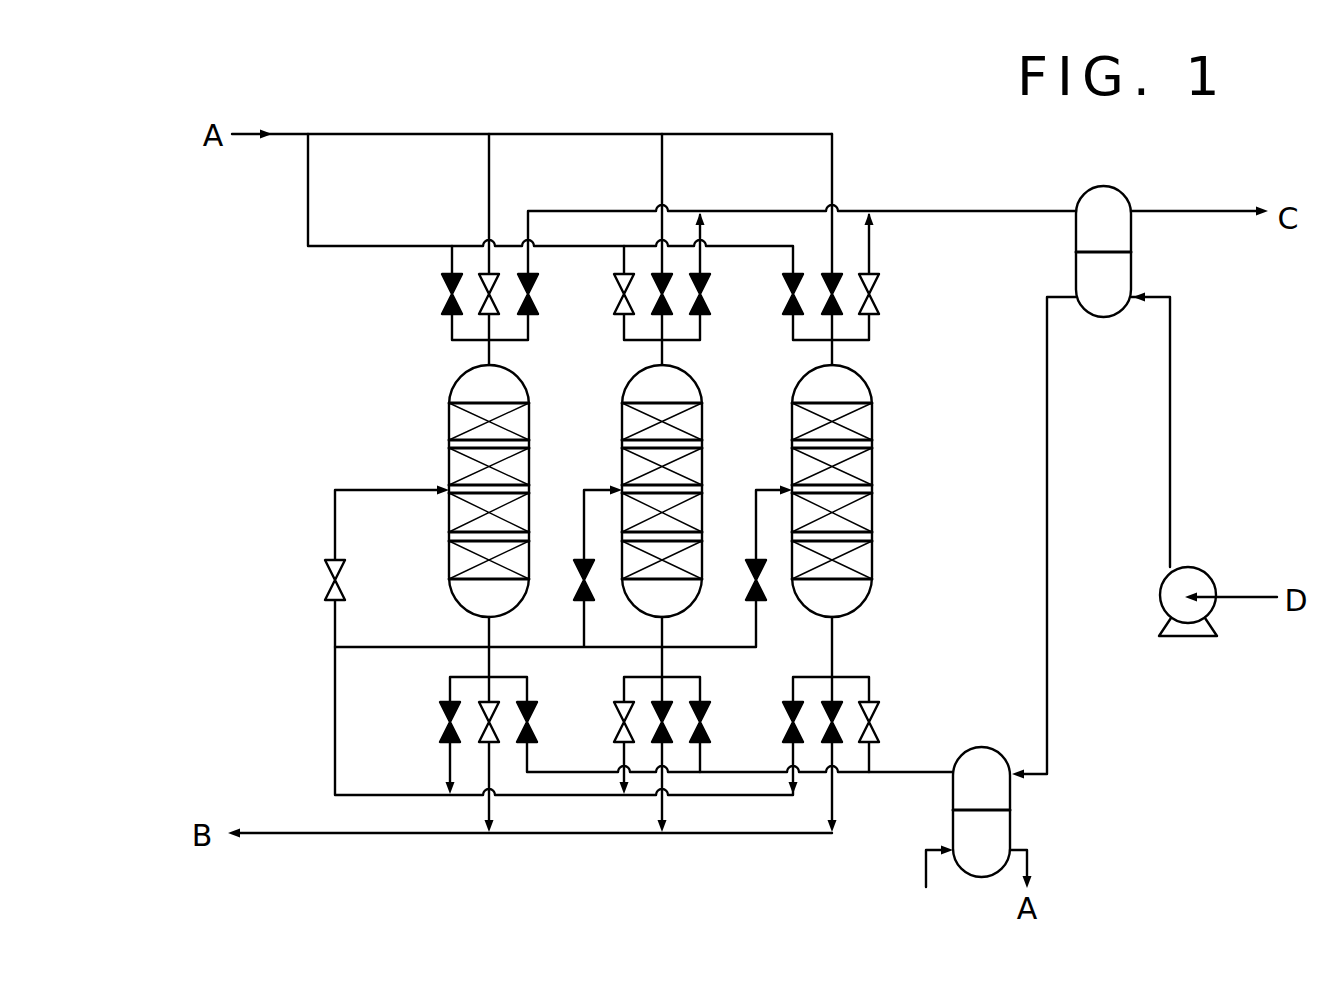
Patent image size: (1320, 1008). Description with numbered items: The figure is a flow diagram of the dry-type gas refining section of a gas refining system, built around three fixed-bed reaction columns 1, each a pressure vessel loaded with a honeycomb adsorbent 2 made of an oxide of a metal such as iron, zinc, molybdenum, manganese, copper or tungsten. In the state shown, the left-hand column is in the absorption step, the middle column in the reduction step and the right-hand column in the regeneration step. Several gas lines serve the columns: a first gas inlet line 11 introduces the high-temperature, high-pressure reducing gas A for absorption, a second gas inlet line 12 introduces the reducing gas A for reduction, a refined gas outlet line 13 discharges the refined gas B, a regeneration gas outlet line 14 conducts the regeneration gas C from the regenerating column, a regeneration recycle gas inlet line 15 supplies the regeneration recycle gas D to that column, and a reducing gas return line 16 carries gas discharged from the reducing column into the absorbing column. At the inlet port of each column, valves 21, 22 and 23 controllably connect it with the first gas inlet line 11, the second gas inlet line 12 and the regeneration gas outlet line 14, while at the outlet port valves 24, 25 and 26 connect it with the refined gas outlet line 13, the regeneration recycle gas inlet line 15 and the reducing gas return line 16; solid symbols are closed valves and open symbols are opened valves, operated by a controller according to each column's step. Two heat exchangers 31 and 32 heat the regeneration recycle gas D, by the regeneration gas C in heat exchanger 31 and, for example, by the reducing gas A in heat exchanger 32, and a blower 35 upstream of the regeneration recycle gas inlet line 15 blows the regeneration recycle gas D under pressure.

The fixed-bed reaction column 1 is at (625, 491).
The honeycomb adsorbent 2 is at (521, 423).
The first gas inlet line 11 is at (380, 133).
The second gas inlet line 12 is at (362, 246).
The refined gas outlet line 13 is at (358, 835).
The regeneration gas outlet line 14 is at (944, 211).
The regeneration recycle gas inlet line 15 is at (1047, 406).
The reducing gas return line 16 is at (334, 728).
The valve 21 is at (480, 300).
The valve 22 is at (441, 294).
The valve 23 is at (537, 294).
The valve 24 is at (478, 714).
The valve 25 is at (538, 711).
The valve 26 is at (439, 722).
The heat exchanger 31 is at (1133, 268).
The heat exchanger 32 is at (1012, 800).
The blower 35 is at (1208, 573).